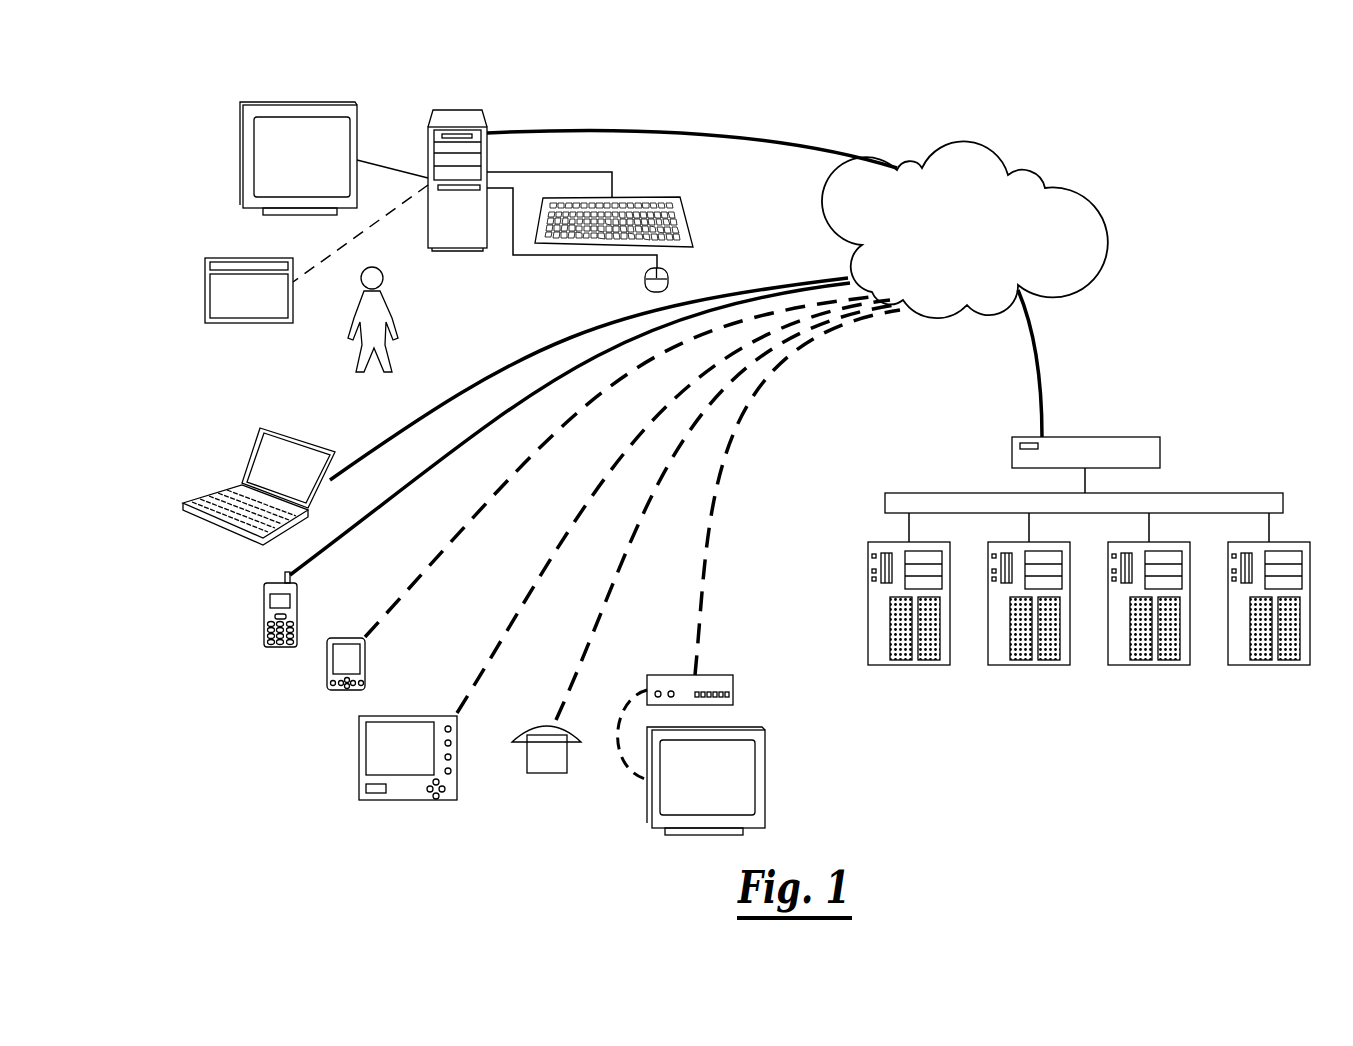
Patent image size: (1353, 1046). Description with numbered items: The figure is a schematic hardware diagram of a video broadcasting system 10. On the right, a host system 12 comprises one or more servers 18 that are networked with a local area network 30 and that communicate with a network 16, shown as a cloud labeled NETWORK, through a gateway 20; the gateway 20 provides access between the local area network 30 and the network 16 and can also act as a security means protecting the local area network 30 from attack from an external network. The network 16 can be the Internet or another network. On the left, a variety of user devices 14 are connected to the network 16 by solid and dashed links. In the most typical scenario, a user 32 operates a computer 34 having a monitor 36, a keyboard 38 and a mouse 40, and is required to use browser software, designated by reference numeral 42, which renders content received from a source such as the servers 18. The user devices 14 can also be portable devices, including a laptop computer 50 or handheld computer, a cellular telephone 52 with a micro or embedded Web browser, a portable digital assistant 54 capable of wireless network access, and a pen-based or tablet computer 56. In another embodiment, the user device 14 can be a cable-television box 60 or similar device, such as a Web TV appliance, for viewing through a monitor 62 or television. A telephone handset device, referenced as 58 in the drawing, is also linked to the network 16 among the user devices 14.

The system 10 is at (1155, 130).
The host system 12 is at (1205, 396).
The user devices 14 is at (260, 806).
The network 16 is at (983, 142).
The servers 18 is at (1305, 578).
The gateway 20 is at (1100, 437).
The local area network 30 is at (1283, 500).
The user 32 is at (386, 338).
The computer 34 is at (428, 142).
The monitor 36 is at (240, 150).
The keyboard 38 is at (665, 198).
The mouse 40 is at (645, 278).
The browser 42 is at (242, 323).
The laptop computer 50 is at (245, 455).
The cellular telephone 52 is at (262, 618).
The portable digital assistant 54 is at (327, 672).
The tablet computer 56 is at (360, 772).
The telephone 58 is at (527, 760).
The cable-television box 60 is at (710, 675).
The monitor 62 is at (650, 793).